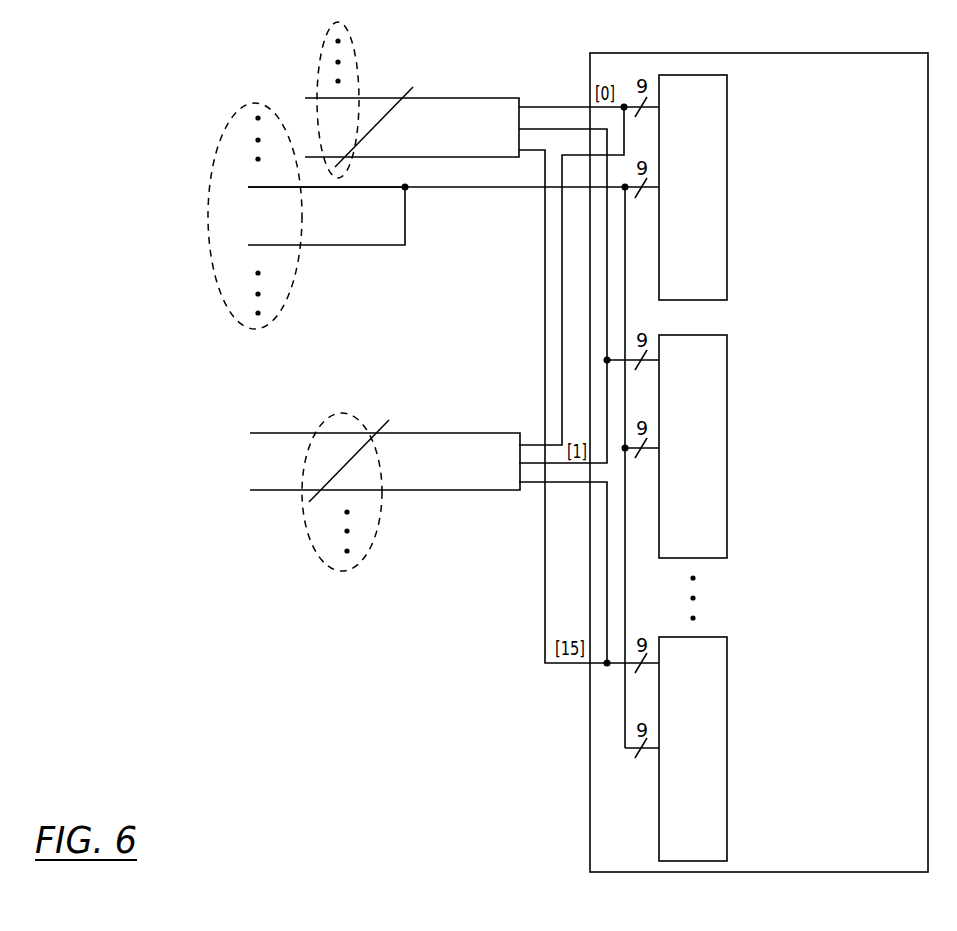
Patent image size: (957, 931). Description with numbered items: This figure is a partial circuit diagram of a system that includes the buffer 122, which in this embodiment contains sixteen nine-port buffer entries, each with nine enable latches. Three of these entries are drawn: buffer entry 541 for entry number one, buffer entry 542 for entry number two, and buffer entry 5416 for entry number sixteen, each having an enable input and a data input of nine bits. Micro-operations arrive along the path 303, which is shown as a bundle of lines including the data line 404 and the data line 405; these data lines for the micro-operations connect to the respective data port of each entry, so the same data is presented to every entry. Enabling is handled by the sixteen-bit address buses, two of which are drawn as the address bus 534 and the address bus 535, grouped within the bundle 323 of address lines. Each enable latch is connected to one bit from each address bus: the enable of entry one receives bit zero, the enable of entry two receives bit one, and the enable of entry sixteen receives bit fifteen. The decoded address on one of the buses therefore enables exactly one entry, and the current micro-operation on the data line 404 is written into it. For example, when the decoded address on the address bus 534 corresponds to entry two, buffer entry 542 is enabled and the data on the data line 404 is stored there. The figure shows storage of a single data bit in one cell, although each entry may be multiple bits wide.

The buffer 122 is at (918, 869).
The path 303 is at (212, 160).
The set of select/enable signal lines 323 is at (348, 33).
The data line 404 is at (311, 185).
The data line 405 is at (311, 221).
The 16-bit address bus 534 is at (488, 160).
The 16-bit address bus 535 is at (463, 493).
The buffer entry 541 is at (727, 187).
The buffer entry 542 is at (725, 446).
The buffer entry 5416 is at (730, 749).